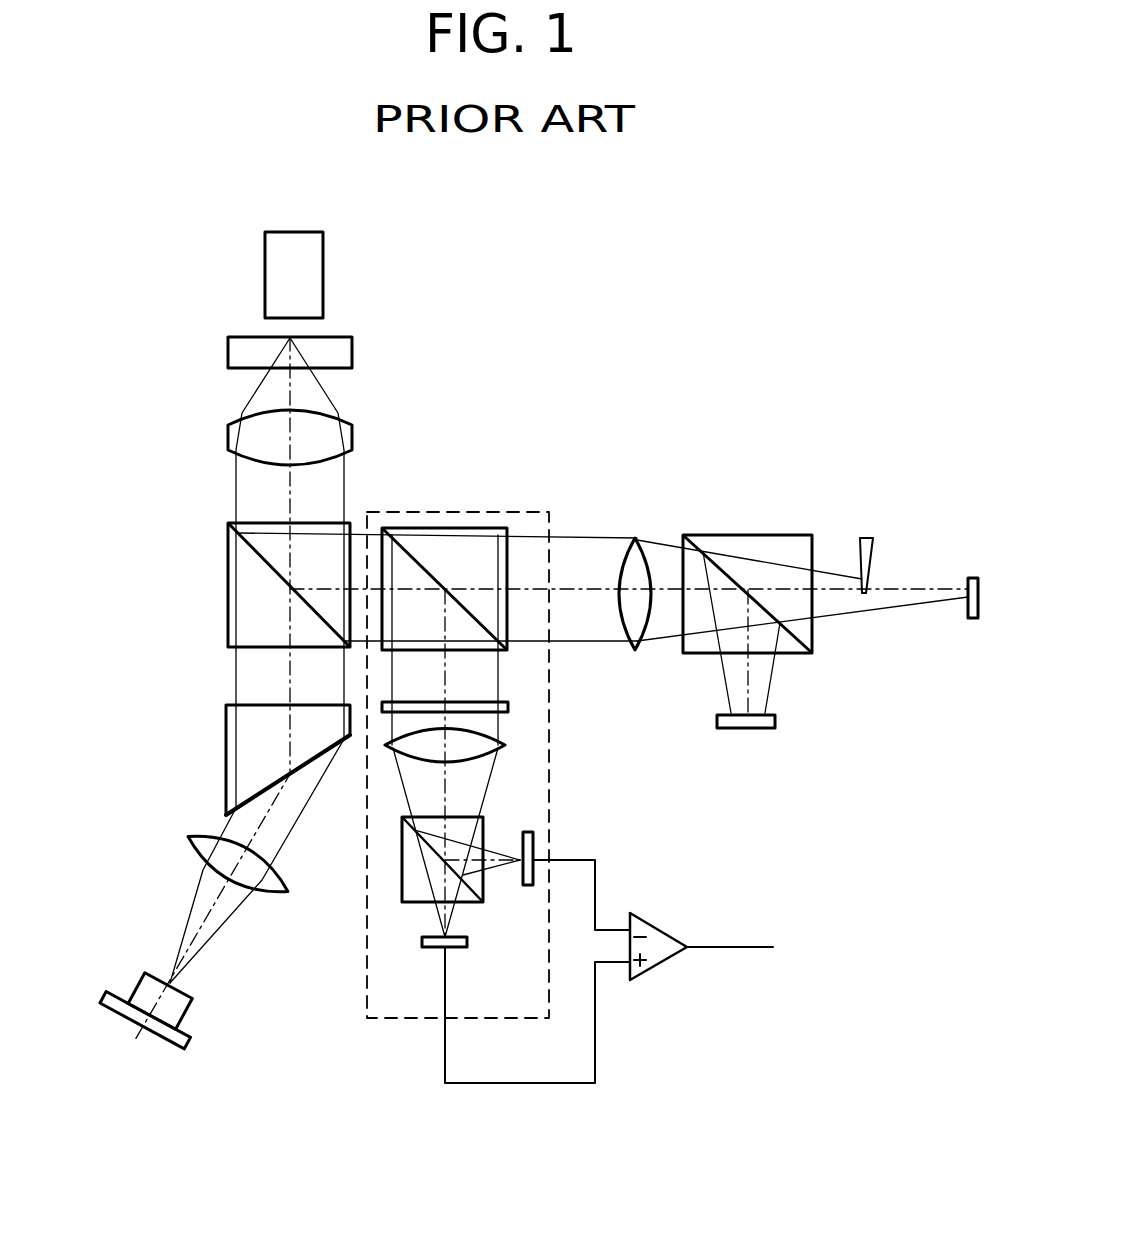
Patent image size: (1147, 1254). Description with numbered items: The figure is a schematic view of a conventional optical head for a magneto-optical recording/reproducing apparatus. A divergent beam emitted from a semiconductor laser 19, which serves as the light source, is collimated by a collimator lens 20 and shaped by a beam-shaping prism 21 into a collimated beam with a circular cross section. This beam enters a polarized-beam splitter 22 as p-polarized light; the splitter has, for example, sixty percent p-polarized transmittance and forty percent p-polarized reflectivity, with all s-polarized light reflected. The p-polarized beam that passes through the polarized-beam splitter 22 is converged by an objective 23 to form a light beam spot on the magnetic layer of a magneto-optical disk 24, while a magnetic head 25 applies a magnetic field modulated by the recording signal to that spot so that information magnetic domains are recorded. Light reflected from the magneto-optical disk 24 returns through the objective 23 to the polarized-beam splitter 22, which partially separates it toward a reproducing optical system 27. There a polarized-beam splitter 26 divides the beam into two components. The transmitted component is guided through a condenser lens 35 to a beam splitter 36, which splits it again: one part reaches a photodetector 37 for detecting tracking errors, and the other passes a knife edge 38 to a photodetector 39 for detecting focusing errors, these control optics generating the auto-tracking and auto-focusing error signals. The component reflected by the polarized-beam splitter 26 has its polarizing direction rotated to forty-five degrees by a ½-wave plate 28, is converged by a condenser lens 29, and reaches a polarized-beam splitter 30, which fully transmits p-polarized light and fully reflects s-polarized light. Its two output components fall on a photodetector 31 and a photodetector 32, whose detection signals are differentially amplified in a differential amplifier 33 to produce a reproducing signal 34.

The semiconductor laser 19 is at (145, 974).
The collimator lens 20 is at (198, 836).
The beam-shaping prism 21 is at (226, 720).
The polarized-beam splitter 22 is at (228, 548).
The objective 23 is at (352, 438).
The magneto-optical disk 24 is at (352, 355).
The magnetic head 25 is at (323, 268).
The polarized-beam splitter 26 is at (493, 527).
The reproducing optical system 27 is at (410, 1020).
The ½-wave plate 28 is at (508, 705).
The condenser lens 29 is at (505, 745).
The polarized-beam splitter 30 is at (483, 885).
The photodetector 31 is at (533, 838).
The photodetector 32 is at (422, 943).
The differential amplifier 33 is at (662, 927).
The reproducing signal 34 is at (743, 947).
The condenser lens 35 is at (633, 538).
The beam splitter 36 is at (770, 535).
The photodetector 37 is at (775, 721).
The knife edge 38 is at (862, 538).
The photodetector 39 is at (967, 573).